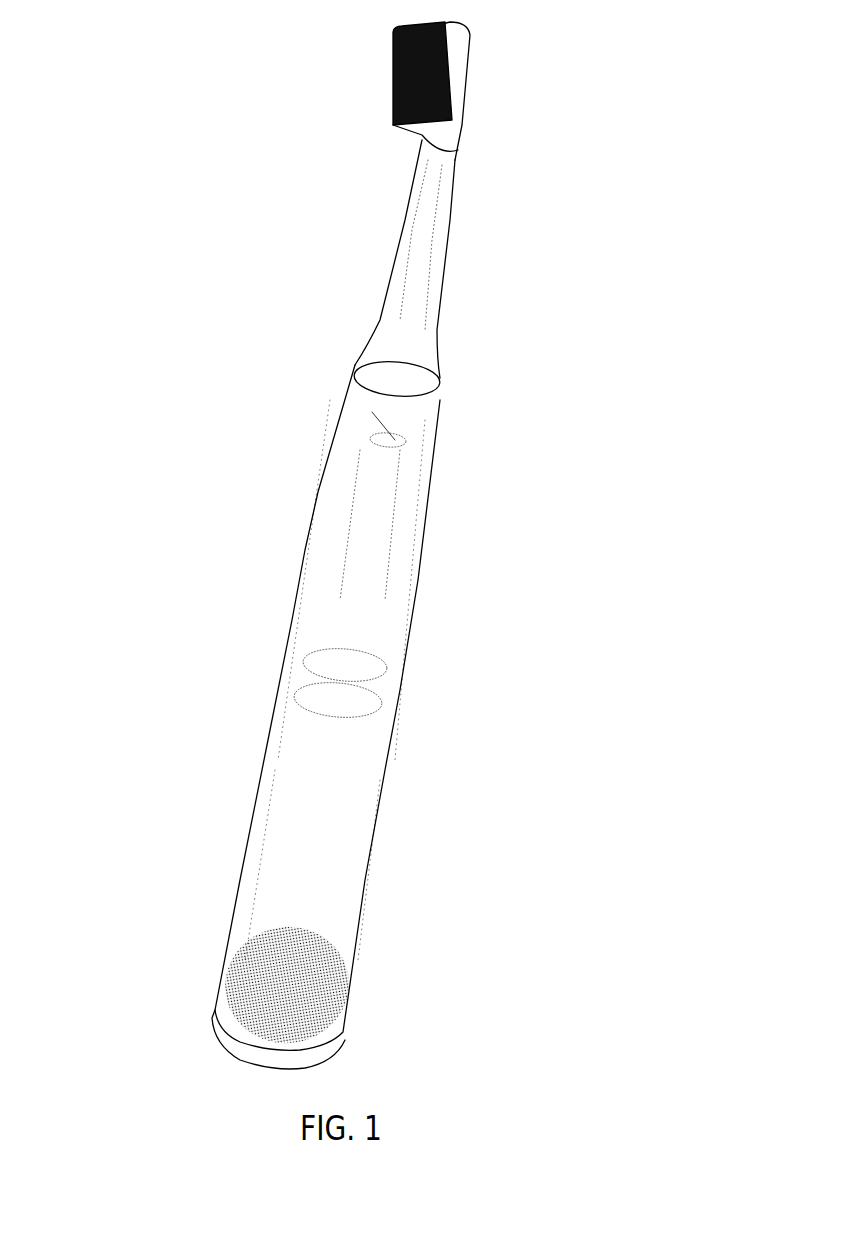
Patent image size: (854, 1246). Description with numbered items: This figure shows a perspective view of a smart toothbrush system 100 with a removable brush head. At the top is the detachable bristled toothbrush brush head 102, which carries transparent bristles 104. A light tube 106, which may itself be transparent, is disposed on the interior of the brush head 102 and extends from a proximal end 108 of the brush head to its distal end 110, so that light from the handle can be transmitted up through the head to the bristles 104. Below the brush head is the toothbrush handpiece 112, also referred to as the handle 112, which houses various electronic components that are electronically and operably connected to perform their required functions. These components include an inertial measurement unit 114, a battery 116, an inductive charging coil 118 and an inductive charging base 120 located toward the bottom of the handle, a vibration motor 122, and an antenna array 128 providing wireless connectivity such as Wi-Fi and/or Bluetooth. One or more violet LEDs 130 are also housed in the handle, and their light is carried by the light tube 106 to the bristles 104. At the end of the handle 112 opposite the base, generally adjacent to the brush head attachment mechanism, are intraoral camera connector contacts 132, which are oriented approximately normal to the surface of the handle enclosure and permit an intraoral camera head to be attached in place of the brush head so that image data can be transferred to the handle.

The smart toothbrush system 100 is at (214, 82).
The brush head 102 is at (448, 218).
The bristles 104 is at (393, 93).
The light tube 106 is at (418, 290).
The proximal end 108 is at (442, 376).
The distal end 110 is at (456, 164).
The toothbrush handpiece 112 is at (285, 640).
The inertial measurement unit 114 is at (365, 481).
The battery 116 is at (350, 750).
The inductive charging coil 118 is at (338, 993).
The inductive charging base 120 is at (330, 1052).
The vibration motor 122 is at (365, 437).
The antenna array 128 is at (397, 557).
The violet LEDs 130 is at (390, 428).
The intraoral camera connector contacts 132 is at (405, 432).